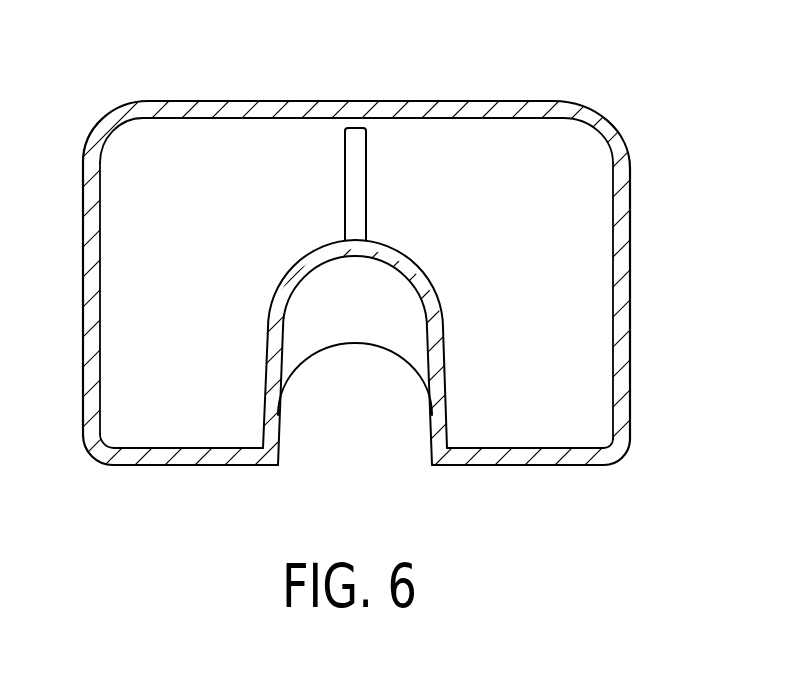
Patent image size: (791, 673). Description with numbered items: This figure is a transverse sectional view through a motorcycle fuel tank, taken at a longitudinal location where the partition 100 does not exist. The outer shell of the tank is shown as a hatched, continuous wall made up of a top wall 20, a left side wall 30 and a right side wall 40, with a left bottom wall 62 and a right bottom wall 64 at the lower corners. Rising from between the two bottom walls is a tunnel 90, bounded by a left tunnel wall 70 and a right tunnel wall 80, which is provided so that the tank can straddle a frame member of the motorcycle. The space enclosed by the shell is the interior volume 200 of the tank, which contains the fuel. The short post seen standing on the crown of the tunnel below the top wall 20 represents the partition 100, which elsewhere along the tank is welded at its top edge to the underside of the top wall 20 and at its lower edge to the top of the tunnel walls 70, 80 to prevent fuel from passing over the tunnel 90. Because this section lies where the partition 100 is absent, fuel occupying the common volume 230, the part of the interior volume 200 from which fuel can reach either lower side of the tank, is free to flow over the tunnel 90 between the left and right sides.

The top wall 20 is at (322, 101).
The left side wall 30 is at (630, 266).
The right side wall 40 is at (82, 292).
The left bottom wall 62 is at (528, 467).
The right bottom wall 64 is at (180, 467).
The left tunnel wall 70 is at (447, 336).
The right tunnel wall 80 is at (268, 323).
The tunnel 90 is at (355, 402).
The partition 100 is at (366, 162).
The interior volume 200 is at (208, 140).
The common volume 230 is at (278, 138).